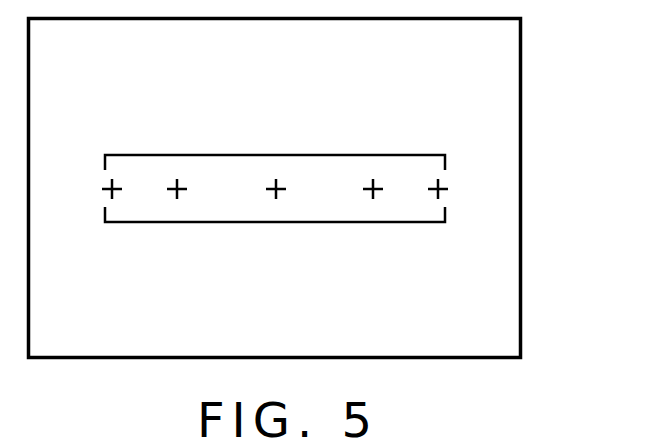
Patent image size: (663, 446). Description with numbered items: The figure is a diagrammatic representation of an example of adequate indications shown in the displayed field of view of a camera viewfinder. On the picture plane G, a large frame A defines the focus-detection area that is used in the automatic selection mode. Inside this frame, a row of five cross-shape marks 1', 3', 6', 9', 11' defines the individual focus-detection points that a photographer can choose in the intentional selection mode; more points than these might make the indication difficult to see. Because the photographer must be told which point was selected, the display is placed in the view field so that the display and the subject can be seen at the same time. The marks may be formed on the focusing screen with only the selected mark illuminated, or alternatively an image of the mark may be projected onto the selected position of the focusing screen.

The picture plane G is at (521, 88).
The large frame A is at (258, 155).
The cross-shape mark 1' is at (114, 223).
The cross-shape mark 3' is at (178, 223).
The cross-shape mark 6' is at (277, 223).
The cross-shape mark 9' is at (373, 223).
The cross-shape mark 11' is at (443, 223).